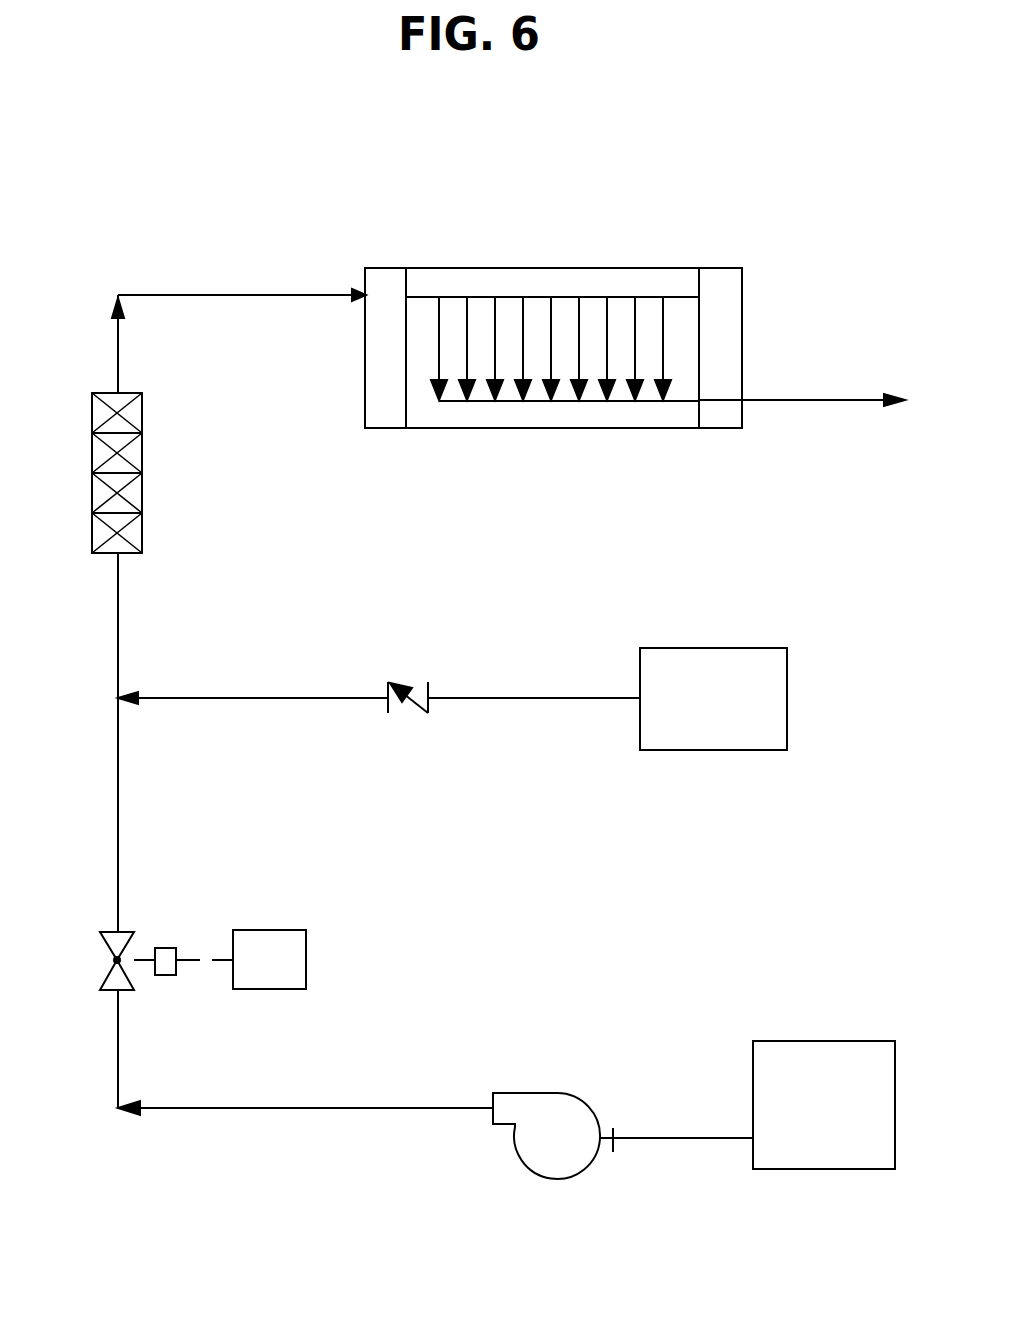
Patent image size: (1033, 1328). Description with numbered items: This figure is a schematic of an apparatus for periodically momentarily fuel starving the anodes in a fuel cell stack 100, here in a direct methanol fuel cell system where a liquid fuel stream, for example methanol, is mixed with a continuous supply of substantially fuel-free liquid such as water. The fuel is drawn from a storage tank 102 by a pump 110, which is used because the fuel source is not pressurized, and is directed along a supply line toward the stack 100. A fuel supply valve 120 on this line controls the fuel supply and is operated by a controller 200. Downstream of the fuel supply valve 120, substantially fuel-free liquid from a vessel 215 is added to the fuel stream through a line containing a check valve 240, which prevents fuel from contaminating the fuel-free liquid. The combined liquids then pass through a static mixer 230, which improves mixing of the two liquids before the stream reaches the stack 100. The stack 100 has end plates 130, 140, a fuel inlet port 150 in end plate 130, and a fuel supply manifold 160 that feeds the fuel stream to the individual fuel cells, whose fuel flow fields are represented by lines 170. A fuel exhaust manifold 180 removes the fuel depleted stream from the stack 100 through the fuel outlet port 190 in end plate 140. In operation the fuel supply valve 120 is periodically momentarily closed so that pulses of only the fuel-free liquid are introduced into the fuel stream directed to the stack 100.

The fuel cell stack 100 is at (378, 143).
The storage tank 102 is at (778, 1055).
The pump 110 is at (553, 1082).
The fuel supply valve 120 is at (115, 960).
The end plate 130 is at (390, 277).
The end plate 140 is at (719, 293).
The fuel inlet port 150 is at (370, 290).
The fuel supply manifold 160 is at (479, 293).
The fuel flow fields 170 is at (610, 345).
The fuel exhaust manifold 180 is at (560, 403).
The fuel outlet port 190 is at (715, 398).
The controller 200 is at (295, 967).
The vessel 215 is at (658, 675).
The static mixer 230 is at (140, 492).
The check valve 240 is at (418, 690).